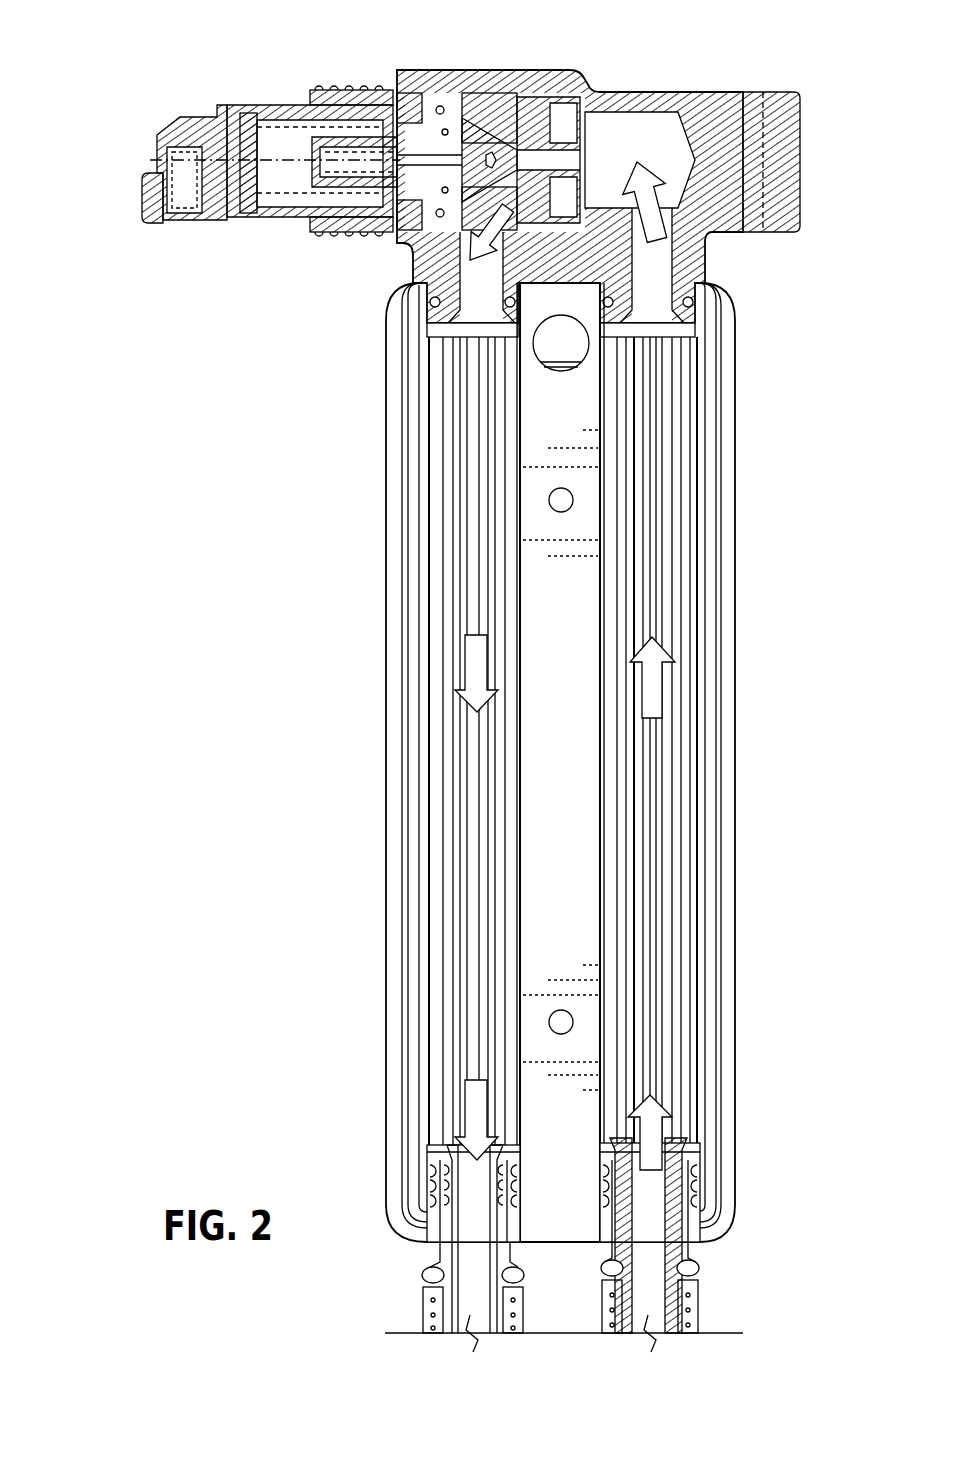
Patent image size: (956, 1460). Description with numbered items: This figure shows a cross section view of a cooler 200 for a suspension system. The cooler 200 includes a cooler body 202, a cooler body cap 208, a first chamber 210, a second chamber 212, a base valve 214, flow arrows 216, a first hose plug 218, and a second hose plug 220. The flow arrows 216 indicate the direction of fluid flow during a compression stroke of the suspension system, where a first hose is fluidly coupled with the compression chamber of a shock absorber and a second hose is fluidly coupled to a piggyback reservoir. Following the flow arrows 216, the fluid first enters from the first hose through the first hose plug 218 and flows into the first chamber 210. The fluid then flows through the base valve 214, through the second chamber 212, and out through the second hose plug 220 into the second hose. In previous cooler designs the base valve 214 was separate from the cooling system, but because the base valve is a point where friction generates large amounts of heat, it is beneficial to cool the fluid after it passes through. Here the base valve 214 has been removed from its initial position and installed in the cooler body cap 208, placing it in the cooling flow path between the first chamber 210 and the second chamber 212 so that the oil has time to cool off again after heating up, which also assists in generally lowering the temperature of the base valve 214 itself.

The cooler 200 is at (103, 85).
The cooler body 202 is at (737, 1012).
The cooler body cap 208 is at (712, 115).
The first chamber 210 is at (677, 470).
The second chamber 212 is at (447, 453).
The base valve 214 is at (370, 163).
The flow arrows 216 is at (650, 682).
The first hose plug 218 is at (650, 1300).
The second hose plug 220 is at (470, 1292).